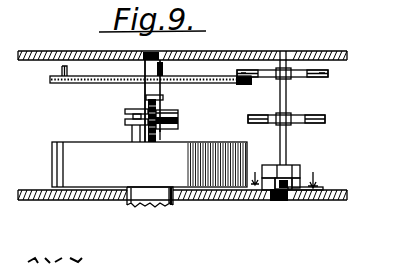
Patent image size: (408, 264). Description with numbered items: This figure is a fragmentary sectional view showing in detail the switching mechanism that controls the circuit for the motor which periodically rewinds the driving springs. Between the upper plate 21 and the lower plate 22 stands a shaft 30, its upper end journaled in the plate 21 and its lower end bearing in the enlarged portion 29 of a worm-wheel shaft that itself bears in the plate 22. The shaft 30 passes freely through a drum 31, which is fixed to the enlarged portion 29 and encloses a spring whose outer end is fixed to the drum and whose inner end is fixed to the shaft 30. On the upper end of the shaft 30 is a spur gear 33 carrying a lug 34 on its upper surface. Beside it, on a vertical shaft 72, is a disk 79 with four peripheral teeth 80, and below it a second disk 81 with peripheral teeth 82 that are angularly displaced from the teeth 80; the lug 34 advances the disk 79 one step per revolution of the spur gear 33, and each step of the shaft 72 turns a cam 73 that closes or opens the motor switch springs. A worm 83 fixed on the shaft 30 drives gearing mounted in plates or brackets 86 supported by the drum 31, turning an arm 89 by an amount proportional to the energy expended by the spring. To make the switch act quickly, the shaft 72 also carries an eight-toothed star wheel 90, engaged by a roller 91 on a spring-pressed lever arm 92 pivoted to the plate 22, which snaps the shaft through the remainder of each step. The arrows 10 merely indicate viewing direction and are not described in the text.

The direction arrows 10 is at (292, 174).
The plate 21 is at (259, 57).
The plate 22 is at (258, 199).
The enlarged portion 29 is at (147, 206).
The shaft 30 is at (160, 93).
The drum 31 is at (149, 164).
The spur gear 33 is at (93, 83).
The lug 34 is at (58, 71).
The shaft 72 is at (286, 101).
The cam 73 is at (293, 175).
The disk 79 is at (297, 75).
The peripheral teeth 80 is at (278, 77).
The second disk 81 is at (295, 121).
The peripheral teeth 82 is at (250, 118).
The worm 83 is at (185, 122).
The plates or brackets 86 is at (172, 136).
The arm 89 is at (178, 111).
The star wheel 90 is at (276, 201).
The roller 91 is at (281, 201).
The lever arm 92 is at (317, 201).